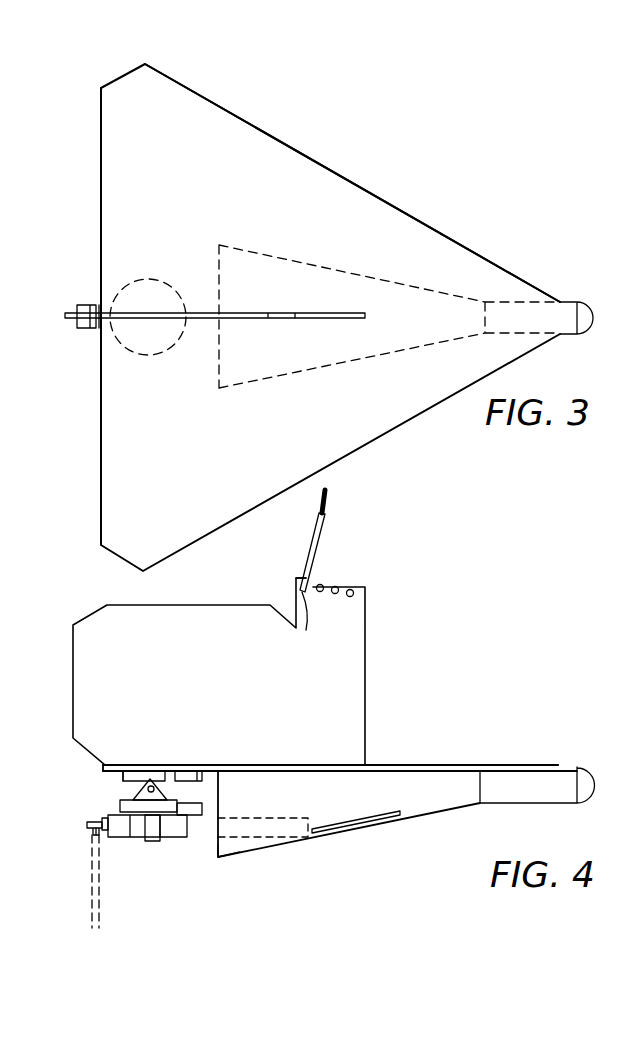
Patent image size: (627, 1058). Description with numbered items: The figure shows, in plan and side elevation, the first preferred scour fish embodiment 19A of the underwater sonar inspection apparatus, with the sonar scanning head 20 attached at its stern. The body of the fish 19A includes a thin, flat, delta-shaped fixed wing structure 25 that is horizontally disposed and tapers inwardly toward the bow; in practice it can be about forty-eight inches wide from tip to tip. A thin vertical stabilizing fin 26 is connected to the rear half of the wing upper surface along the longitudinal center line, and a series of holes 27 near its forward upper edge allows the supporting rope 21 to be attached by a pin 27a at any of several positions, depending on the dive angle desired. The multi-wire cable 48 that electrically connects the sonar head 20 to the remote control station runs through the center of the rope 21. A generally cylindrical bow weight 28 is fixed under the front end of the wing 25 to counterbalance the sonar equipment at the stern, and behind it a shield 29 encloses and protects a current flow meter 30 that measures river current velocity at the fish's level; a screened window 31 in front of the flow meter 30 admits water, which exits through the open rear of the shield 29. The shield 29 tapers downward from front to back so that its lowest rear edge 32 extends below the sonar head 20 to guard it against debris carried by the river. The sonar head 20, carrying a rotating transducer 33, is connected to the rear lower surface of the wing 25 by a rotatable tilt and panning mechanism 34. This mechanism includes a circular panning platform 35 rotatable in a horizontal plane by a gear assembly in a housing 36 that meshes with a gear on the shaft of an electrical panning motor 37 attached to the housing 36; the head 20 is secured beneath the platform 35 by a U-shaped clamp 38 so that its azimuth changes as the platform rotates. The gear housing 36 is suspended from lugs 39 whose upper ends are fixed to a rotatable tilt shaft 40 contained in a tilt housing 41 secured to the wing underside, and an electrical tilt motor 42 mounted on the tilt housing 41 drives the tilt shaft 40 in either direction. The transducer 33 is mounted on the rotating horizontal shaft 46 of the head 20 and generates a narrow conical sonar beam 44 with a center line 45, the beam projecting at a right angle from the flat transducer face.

In FIG. 3, the scour fish embodiment 19A is at (474, 246).
In FIG. 4, the scour fish embodiment 19A is at (420, 756).
In FIG. 4, the sonar scanning head 20 is at (130, 833).
In FIG. 4, the supporting rope 21 is at (318, 536).
In FIG. 3, the fixed wing structure 25 is at (375, 205).
In FIG. 4, the fixed wing structure 25 is at (538, 765).
In FIG. 3, the vertical stabilizing fin 26 is at (240, 313).
In FIG. 4, the vertical stabilizing fin 26 is at (238, 661).
In FIG. 4, the holes 27 is at (336, 586).
In FIG. 4, the pin 27a is at (296, 580).
In FIG. 3, the bow weight 28 is at (570, 310).
In FIG. 4, the bow weight 28 is at (526, 793).
In FIG. 3, the shield 29 is at (388, 362).
In FIG. 4, the shield 29 is at (431, 813).
In FIG. 4, the current flow meter 30 is at (263, 818).
In FIG. 4, the screened window 31 is at (356, 830).
In FIG. 4, the lowest rear edge 32 is at (218, 857).
In FIG. 3, the rotating transducer 33 is at (87, 305).
In FIG. 4, the rotating transducer 33 is at (92, 826).
In FIG. 4, the tilt and panning mechanism 34 is at (114, 791).
In FIG. 3, the panning platform 35 is at (164, 276).
In FIG. 4, the panning platform 35 is at (104, 820).
In FIG. 4, the gear housing 36 is at (120, 805).
In FIG. 4, the panning motor 37 is at (196, 816).
In FIG. 4, the U-shaped clamp 38 is at (152, 842).
In FIG. 4, the lugs 39 is at (122, 783).
In FIG. 4, the tilt shaft 40 is at (152, 770).
In FIG. 4, the tilt housing 41 is at (122, 768).
In FIG. 4, the tilt motor 42 is at (201, 770).
In FIG. 4, the conical sonar beam 44 is at (92, 896).
In FIG. 4, the center line 45 is at (100, 926).
In FIG. 4, the rotating horizontal shaft 46 is at (108, 830).
In FIG. 4, the multi-wire cable 48 is at (328, 500).